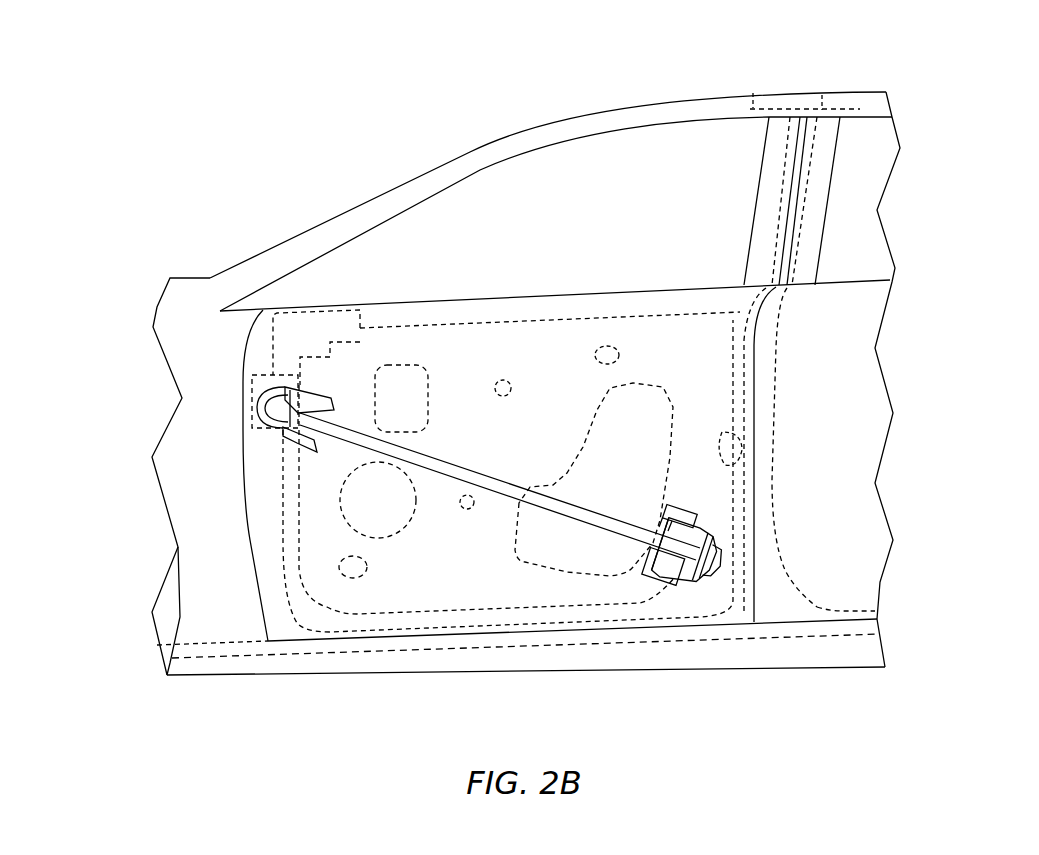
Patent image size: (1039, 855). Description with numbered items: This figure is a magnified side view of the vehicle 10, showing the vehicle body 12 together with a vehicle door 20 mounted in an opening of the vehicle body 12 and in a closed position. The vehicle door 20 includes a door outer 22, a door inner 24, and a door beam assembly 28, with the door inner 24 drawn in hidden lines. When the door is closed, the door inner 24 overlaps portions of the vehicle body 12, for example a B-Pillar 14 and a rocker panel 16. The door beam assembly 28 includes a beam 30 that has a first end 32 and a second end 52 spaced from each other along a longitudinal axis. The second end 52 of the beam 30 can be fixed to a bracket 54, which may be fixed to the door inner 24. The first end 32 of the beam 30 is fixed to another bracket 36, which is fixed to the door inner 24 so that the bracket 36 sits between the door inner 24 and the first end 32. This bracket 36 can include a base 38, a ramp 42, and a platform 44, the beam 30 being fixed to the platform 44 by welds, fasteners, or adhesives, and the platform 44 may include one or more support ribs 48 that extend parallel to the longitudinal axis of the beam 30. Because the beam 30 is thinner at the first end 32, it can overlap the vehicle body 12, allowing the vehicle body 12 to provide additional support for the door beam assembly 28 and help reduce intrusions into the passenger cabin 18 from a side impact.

The vehicle 10 is at (992, 86).
The vehicle body 12 is at (348, 677).
The B-Pillar 14 is at (772, 213).
The rocker panel 16 is at (387, 622).
The passenger cabin 18 is at (515, 207).
The vehicle door 20 is at (390, 295).
The door outer 22 is at (262, 346).
The door inner 24 is at (683, 615).
The door beam assembly 28 is at (473, 377).
The beam 30 is at (508, 468).
The first end 32 is at (700, 527).
The bracket 36 is at (682, 535).
The base 38 is at (720, 540).
The ramp 42 is at (705, 518).
The platform 44 is at (667, 505).
The support ribs 48 is at (665, 530).
The second end 52 is at (318, 385).
The bracket 54 is at (260, 424).